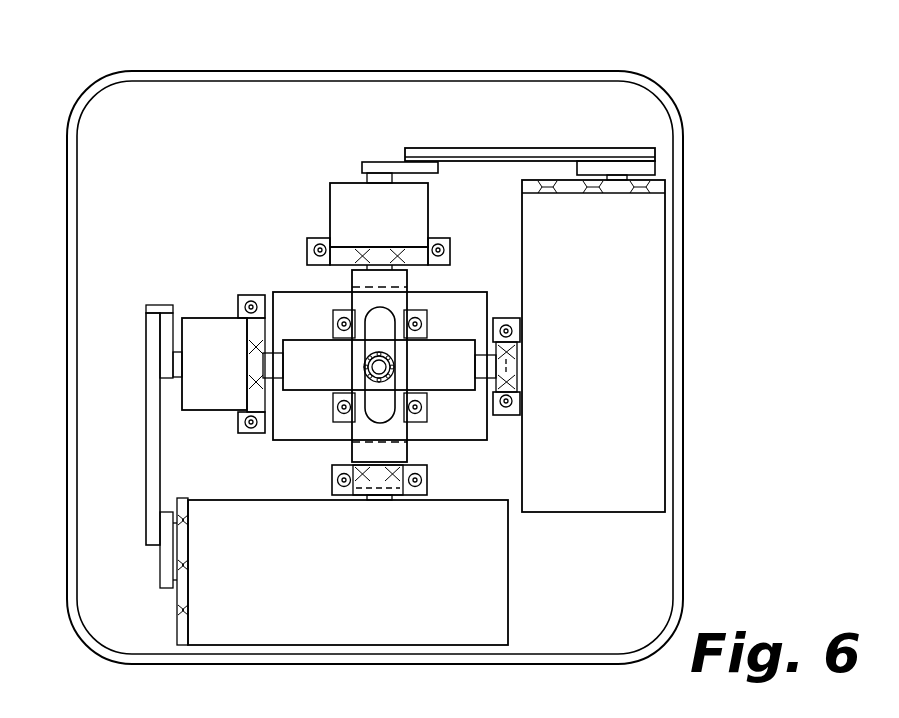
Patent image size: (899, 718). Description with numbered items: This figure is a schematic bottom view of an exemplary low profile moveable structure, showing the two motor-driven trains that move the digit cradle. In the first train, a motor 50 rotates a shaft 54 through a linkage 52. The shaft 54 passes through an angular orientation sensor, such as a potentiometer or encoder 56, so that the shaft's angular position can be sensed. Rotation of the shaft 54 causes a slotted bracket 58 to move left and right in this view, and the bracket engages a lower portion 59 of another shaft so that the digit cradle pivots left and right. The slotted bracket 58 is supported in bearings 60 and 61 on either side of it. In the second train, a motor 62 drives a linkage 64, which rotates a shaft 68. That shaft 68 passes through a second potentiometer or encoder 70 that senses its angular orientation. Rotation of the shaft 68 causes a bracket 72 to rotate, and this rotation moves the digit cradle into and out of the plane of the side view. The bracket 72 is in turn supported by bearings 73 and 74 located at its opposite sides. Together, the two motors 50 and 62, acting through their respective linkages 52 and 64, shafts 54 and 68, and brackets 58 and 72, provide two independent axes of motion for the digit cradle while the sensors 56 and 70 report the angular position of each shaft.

The motor 50 is at (602, 306).
The linkage 52 is at (519, 130).
The shaft 54 is at (384, 162).
The potentiometer or encoder 56 is at (333, 213).
The slotted bracket 58 is at (385, 304).
The lower portion of shaft 59 is at (366, 379).
The bearing 60 is at (428, 485).
The bearing 61 is at (450, 239).
The motor 62 is at (370, 598).
The linkage 64 is at (132, 442).
The shaft 68 is at (182, 352).
The potentiometer or encoder 70 is at (225, 376).
The bracket 72 is at (290, 298).
The bearing 73 is at (250, 434).
The bearing 74 is at (510, 360).